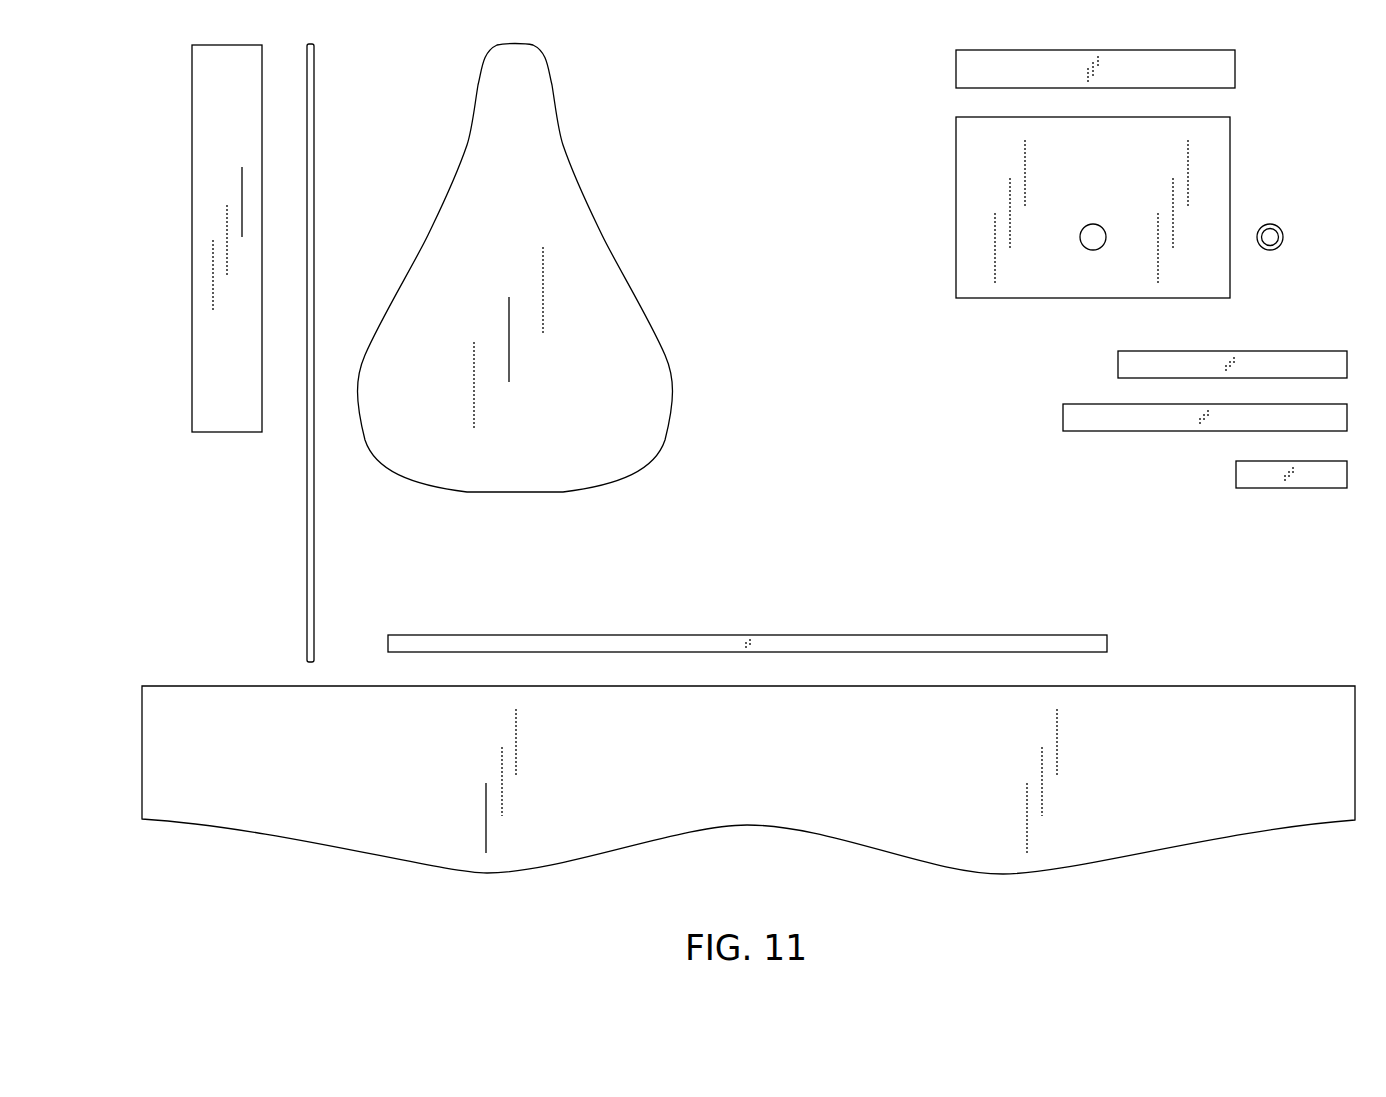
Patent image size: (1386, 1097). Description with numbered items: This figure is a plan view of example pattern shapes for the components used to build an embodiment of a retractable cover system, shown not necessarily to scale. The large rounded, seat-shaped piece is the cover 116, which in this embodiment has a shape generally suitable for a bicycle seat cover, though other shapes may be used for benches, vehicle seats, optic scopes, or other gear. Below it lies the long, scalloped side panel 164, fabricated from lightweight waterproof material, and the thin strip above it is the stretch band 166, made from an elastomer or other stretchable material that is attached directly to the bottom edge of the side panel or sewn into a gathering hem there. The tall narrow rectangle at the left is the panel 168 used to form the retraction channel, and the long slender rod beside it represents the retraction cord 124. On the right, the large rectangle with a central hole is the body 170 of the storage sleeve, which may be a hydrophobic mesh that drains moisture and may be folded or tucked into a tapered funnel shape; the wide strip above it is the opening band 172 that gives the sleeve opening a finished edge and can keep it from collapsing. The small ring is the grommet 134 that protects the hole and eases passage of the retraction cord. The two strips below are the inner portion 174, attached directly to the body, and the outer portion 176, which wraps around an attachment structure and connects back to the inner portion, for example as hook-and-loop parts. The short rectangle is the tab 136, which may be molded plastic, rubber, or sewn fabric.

The cover 116 is at (433, 260).
The retraction cord 124 is at (314, 120).
The grommet 134 is at (1282, 230).
The tab 136 is at (1237, 471).
The side panel 164 is at (203, 693).
The stretch band 166 is at (940, 637).
The panel 168 is at (208, 228).
The body 170 is at (962, 143).
The opening band 172 is at (962, 67).
The inner portion 174 is at (1069, 413).
The outer portion 176 is at (1120, 361).